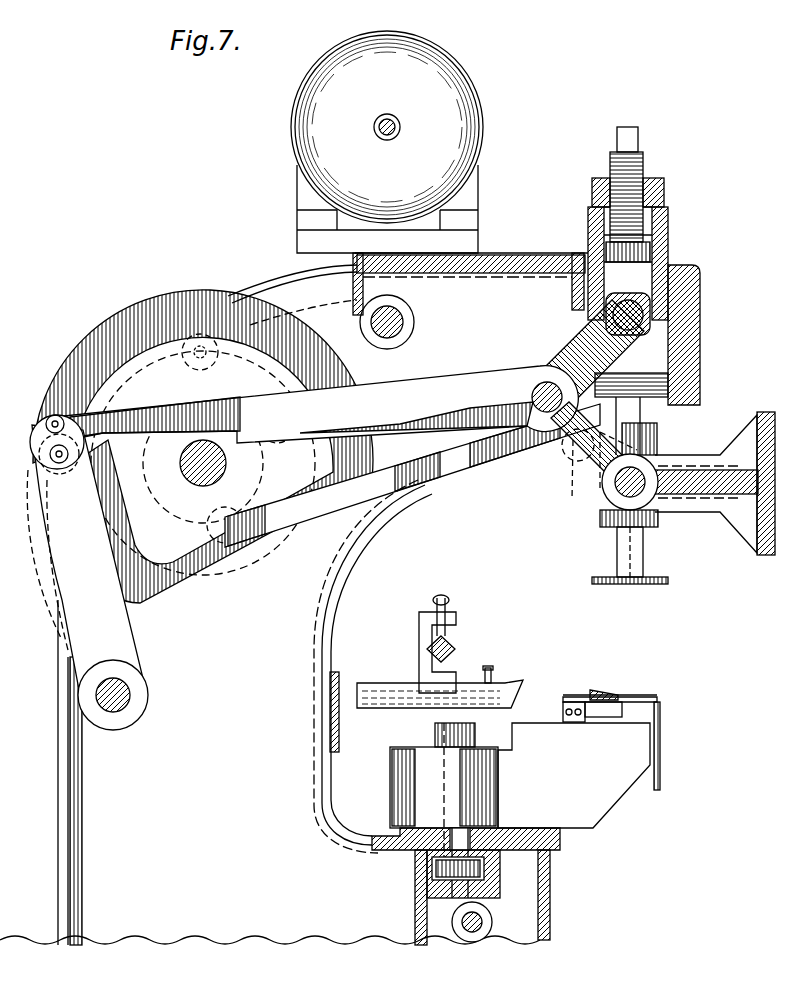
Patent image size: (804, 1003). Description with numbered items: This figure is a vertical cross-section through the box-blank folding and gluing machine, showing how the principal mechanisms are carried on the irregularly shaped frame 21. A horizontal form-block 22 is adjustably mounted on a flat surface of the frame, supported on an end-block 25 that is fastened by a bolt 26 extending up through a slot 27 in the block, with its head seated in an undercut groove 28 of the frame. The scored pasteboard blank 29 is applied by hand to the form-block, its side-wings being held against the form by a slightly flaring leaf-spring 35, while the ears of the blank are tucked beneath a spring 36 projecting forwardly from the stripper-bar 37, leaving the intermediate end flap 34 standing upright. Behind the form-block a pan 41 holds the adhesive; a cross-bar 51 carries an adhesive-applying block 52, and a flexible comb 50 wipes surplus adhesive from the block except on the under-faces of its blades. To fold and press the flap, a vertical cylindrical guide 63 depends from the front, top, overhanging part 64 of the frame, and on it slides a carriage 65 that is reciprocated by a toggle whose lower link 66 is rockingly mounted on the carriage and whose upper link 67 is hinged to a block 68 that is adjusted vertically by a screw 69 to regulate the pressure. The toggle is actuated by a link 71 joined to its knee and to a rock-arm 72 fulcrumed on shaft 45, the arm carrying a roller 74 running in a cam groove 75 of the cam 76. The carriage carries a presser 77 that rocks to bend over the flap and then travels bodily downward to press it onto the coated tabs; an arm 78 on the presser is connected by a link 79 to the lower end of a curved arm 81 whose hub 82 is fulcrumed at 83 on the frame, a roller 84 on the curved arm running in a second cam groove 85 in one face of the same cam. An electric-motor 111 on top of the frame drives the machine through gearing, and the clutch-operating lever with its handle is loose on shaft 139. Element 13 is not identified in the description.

The electric-motor 111 is at (455, 127).
The screw 69 is at (643, 165).
The block 68 is at (640, 302).
The front, top, overhanging part of the machine frame 64 is at (700, 350).
The upper link of toggle 67 is at (560, 348).
The link 71 is at (430, 380).
The cam 76 is at (178, 294).
The cam groove 75 is at (300, 330).
The hub 82 is at (180, 360).
The fulcrum 83 is at (155, 416).
The roller 84 is at (300, 425).
The cam groove 85 is at (170, 472).
The curved arm 81 is at (222, 484).
The roller 74 is at (45, 470).
The rock-arm 72 is at (135, 640).
The shaft 45 is at (128, 692).
The pulley 13 is at (103, 722).
The link 79 is at (472, 462).
The lower link of toggle 66 is at (575, 452).
The arm 78 is at (582, 470).
The carriage 65 is at (657, 440).
The presser 77 is at (768, 416).
The vertical, cylindrical guide 63 is at (640, 550).
The frame 21 is at (358, 562).
The cross-bar 51 is at (456, 648).
The adhesive-applying block 52 is at (458, 663).
The flexible comb 50 is at (492, 670).
The pan 41 is at (370, 710).
The stripper-bar 37 is at (577, 700).
The spring 36 is at (606, 694).
The end flap 34 is at (642, 697).
The form-block 22 is at (662, 713).
The leaf-spring 35 is at (604, 716).
The end-block 25 is at (574, 775).
The slot 27 is at (402, 778).
The pasteboard blank 29 is at (661, 772).
The bolt 26 is at (440, 868).
The undercut groove 28 is at (430, 890).
The shaft 139 is at (470, 932).